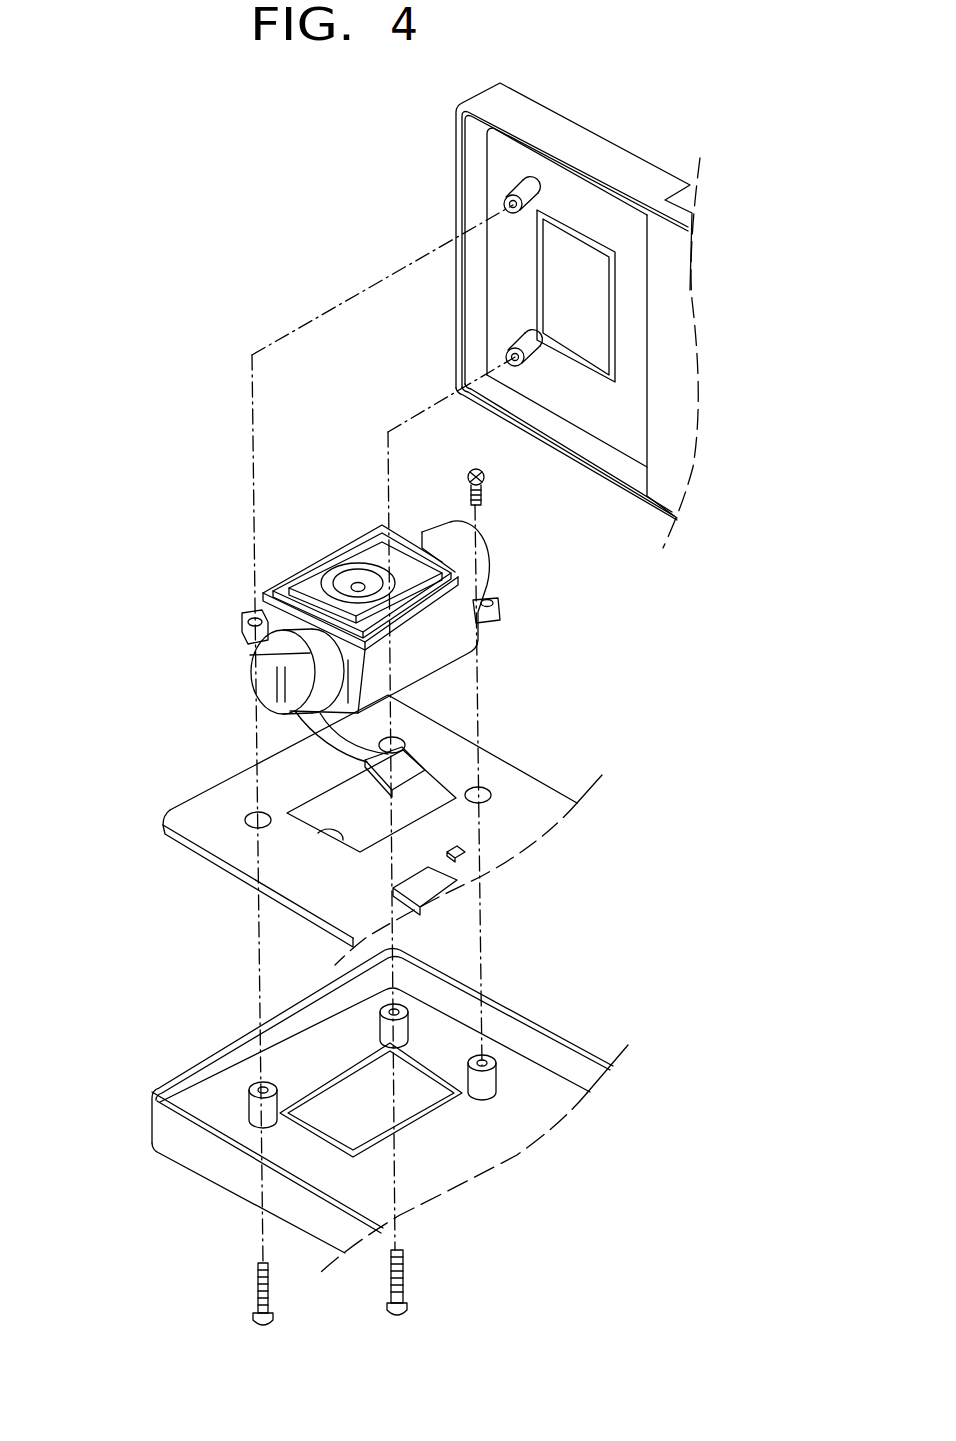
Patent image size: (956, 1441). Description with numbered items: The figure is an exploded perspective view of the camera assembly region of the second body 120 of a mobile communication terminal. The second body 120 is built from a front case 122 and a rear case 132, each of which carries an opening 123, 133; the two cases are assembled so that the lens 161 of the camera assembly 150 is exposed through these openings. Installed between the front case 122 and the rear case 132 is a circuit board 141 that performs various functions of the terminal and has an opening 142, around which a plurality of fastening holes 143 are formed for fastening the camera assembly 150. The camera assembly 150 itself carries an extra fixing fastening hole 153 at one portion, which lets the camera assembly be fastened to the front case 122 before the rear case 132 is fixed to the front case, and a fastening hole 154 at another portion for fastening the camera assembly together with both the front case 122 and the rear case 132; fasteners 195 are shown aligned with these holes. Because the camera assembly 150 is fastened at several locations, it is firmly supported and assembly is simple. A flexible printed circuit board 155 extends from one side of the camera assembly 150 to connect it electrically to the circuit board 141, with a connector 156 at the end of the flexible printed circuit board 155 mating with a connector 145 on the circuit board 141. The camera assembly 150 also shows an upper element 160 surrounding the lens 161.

The second body 120 is at (178, 212).
The front case 122 is at (160, 1130).
The opening 123 is at (333, 1077).
The rear case 132 is at (566, 135).
The opening 133 is at (538, 300).
The circuit board 141 is at (200, 818).
The opening 142 is at (338, 826).
The fastening holes 143 is at (258, 812).
The connector 145 is at (430, 889).
The camera assembly 150 is at (360, 569).
The extra fixing fastening hole 153 is at (495, 605).
The fastening hole 154 is at (247, 621).
The flexible printed circuit board 155 is at (400, 716).
The connector 156 is at (402, 760).
The cover plate 160 is at (358, 586).
The lens 161 is at (360, 548).
The screw 195 is at (482, 492).